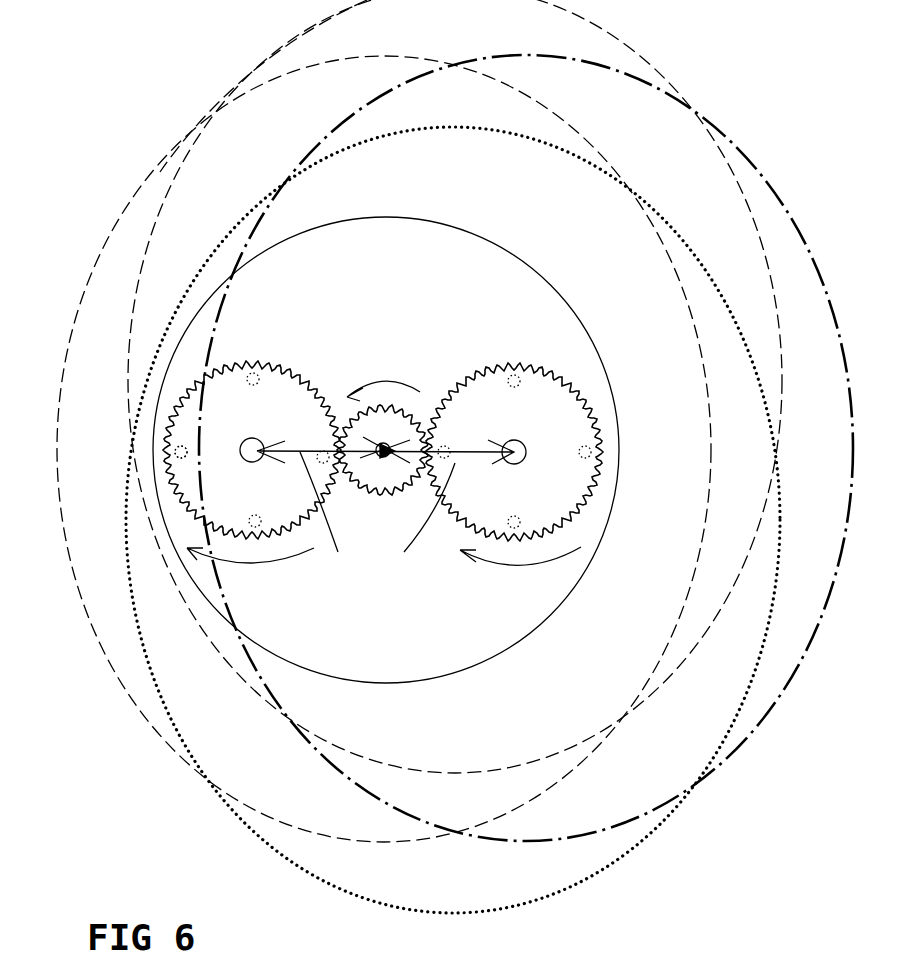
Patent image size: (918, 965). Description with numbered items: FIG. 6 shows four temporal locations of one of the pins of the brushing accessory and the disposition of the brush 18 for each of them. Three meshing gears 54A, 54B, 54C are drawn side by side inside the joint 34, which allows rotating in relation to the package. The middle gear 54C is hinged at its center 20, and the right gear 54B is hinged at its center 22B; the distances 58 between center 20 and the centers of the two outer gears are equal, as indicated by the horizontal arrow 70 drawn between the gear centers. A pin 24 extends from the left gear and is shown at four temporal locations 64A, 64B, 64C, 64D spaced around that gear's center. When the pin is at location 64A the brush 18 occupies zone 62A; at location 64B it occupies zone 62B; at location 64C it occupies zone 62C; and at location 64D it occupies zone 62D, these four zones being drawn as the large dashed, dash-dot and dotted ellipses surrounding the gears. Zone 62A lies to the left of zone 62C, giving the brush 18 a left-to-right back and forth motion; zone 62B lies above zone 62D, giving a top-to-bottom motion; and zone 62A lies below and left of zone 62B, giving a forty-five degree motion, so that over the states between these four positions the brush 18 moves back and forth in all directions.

The brush 18 is at (274, 58).
The center and hinge of gear 54C 20 is at (382, 462).
The center and hinge of gear 54B 22B is at (518, 441).
The pin of motorized member 24 is at (186, 453).
The joint 34 is at (452, 256).
The gear 54A is at (298, 403).
The gear 54B is at (488, 396).
The gear 54C is at (385, 418).
The distances between centers of gears 58 is at (377, 517).
The temporal zone of brush 62A is at (347, 64).
The temporal zone of brush 62B is at (572, 11).
The temporal zone of brush 62C is at (606, 64).
The temporal zone of brush 62D is at (478, 128).
The temporal location of pin 64A is at (199, 438).
The temporal location of pin 64B is at (249, 397).
The temporal location of pin 64C is at (308, 442).
The temporal location of pin 64D is at (271, 510).
The connecting arm 70 is at (458, 452).